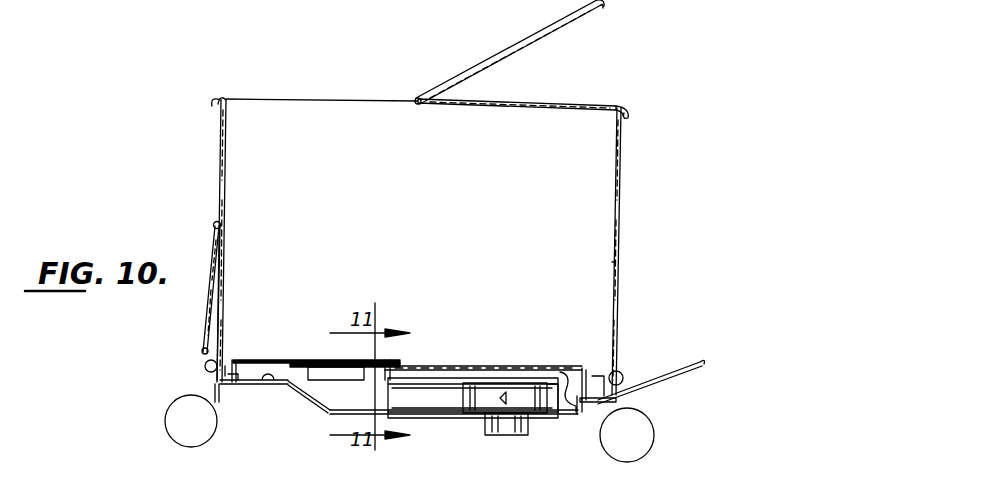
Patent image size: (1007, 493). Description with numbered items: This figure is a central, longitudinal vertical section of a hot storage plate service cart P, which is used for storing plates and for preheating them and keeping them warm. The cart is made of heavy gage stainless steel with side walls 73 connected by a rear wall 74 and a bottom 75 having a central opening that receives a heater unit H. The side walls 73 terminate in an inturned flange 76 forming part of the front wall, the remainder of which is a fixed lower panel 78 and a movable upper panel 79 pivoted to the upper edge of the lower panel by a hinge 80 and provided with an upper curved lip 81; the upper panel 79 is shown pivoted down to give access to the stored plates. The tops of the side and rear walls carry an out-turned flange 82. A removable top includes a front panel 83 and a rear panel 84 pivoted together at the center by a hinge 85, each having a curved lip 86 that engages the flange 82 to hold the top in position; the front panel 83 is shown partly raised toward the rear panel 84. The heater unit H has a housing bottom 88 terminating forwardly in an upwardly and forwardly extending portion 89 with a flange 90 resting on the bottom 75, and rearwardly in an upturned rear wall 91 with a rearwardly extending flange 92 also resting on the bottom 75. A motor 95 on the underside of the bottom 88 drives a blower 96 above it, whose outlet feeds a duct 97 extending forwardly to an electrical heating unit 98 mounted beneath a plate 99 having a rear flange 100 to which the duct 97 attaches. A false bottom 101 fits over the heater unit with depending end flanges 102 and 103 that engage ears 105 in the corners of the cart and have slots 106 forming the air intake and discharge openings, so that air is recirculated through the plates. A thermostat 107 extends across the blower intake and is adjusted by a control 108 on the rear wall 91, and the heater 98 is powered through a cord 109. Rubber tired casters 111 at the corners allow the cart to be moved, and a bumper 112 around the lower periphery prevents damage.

The side walls 73 is at (338, 82).
The rear wall 74 is at (620, 190).
The bottom 75 is at (222, 384).
The inturned flange 76 is at (226, 186).
The fixed lower panel 78 is at (228, 262).
The movable upper panel 79 is at (208, 290).
The hinge 80 is at (214, 222).
The upper curved lip 81 is at (201, 352).
The out-turned flange 82 is at (210, 104).
The front panel 83 is at (512, 48).
The rear panel 84 is at (546, 108).
The hinge 85 is at (416, 106).
The curved lip 86 is at (600, 5).
The bottom 88 is at (414, 416).
The upwardly and forwardly extending portion 89 is at (316, 398).
The forwardly extending flange 90 is at (280, 384).
The upturned rear wall 91 is at (554, 416).
The rearwardly extending flange 92 is at (600, 365).
The motor 95 is at (514, 434).
The blower 96 is at (505, 398).
The duct 97 is at (390, 386).
The electrical heating unit 98 is at (322, 372).
The plate 99 is at (342, 362).
The rear flange 100 is at (392, 364).
The false bottom 101 is at (460, 366).
The front end flange 102 is at (228, 362).
The rear end flange 103 is at (590, 370).
The ears 105 is at (222, 374).
The slots 106 is at (238, 362).
The thermostat 107 is at (500, 382).
The control 108 is at (580, 414).
The cord 109 is at (704, 362).
The casters 111 is at (180, 424).
The bumper 112 is at (200, 366).
The plate service cart P is at (626, 258).
The heater unit H is at (462, 424).